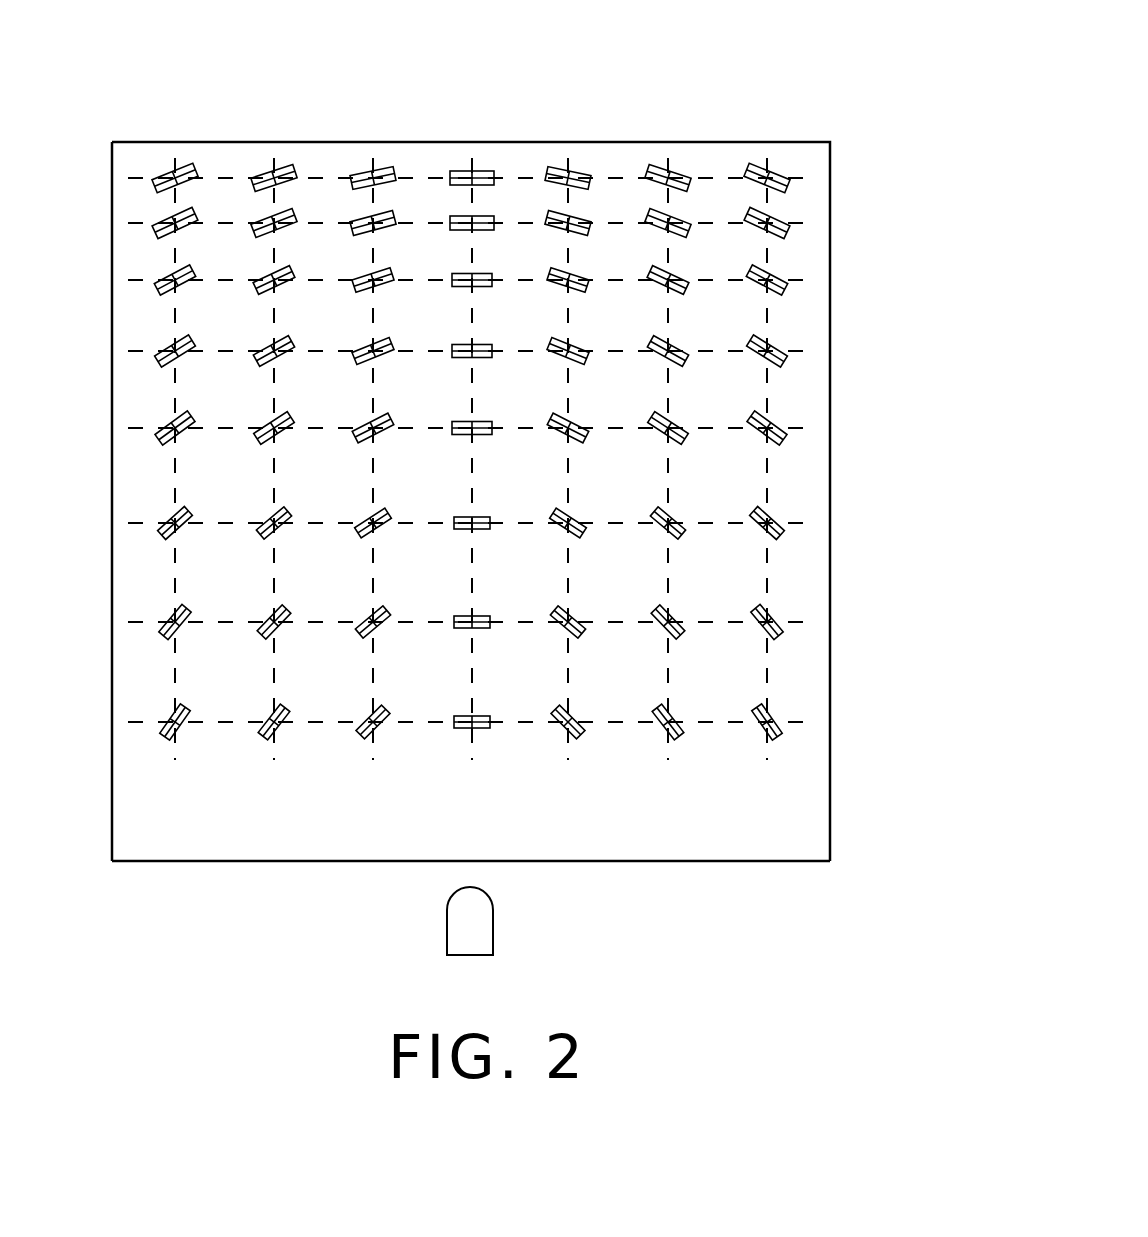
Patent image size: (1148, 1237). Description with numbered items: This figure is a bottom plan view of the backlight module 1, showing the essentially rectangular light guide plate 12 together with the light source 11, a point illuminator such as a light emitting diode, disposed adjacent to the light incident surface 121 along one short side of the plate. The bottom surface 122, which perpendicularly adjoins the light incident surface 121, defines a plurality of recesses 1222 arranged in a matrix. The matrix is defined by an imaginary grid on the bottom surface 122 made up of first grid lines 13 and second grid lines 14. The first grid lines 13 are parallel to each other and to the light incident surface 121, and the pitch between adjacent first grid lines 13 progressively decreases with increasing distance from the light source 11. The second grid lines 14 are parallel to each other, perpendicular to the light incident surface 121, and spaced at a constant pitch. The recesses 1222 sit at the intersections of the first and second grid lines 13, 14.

The backlight module 1 is at (496, 49).
The light source 11 is at (470, 925).
The light guide plate 12 is at (649, 128).
The light incident surface 121 is at (630, 865).
The bottom surface 122 is at (720, 167).
The recesses 1222 is at (673, 533).
The first grid lines 13 is at (713, 523).
The second grid lines 14 is at (670, 402).